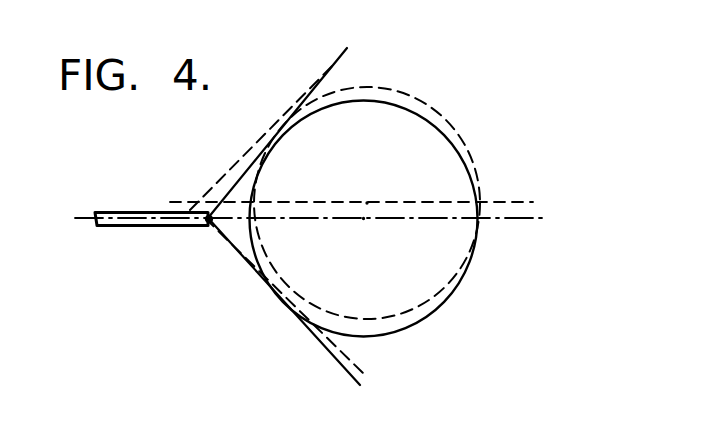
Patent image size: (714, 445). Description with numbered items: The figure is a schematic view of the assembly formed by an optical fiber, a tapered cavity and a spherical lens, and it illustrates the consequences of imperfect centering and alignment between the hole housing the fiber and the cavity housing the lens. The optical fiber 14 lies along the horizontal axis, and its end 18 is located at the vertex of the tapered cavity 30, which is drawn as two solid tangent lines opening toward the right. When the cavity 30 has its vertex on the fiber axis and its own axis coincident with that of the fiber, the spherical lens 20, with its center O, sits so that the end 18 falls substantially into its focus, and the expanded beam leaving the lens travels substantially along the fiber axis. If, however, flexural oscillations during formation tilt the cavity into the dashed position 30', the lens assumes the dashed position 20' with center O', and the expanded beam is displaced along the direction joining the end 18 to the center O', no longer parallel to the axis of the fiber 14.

The optical fiber 14 is at (148, 211).
The end of the optical fiber 18 is at (210, 224).
The spherical lens 20 is at (364, 200).
The displaced spherical lens position 20' is at (390, 203).
The tapered cavity 30 is at (314, 216).
The misaligned tapered cavity position 30' is at (306, 208).
The center of the spherical lens O is at (361, 238).
The center of the displaced spherical lens O' is at (368, 182).